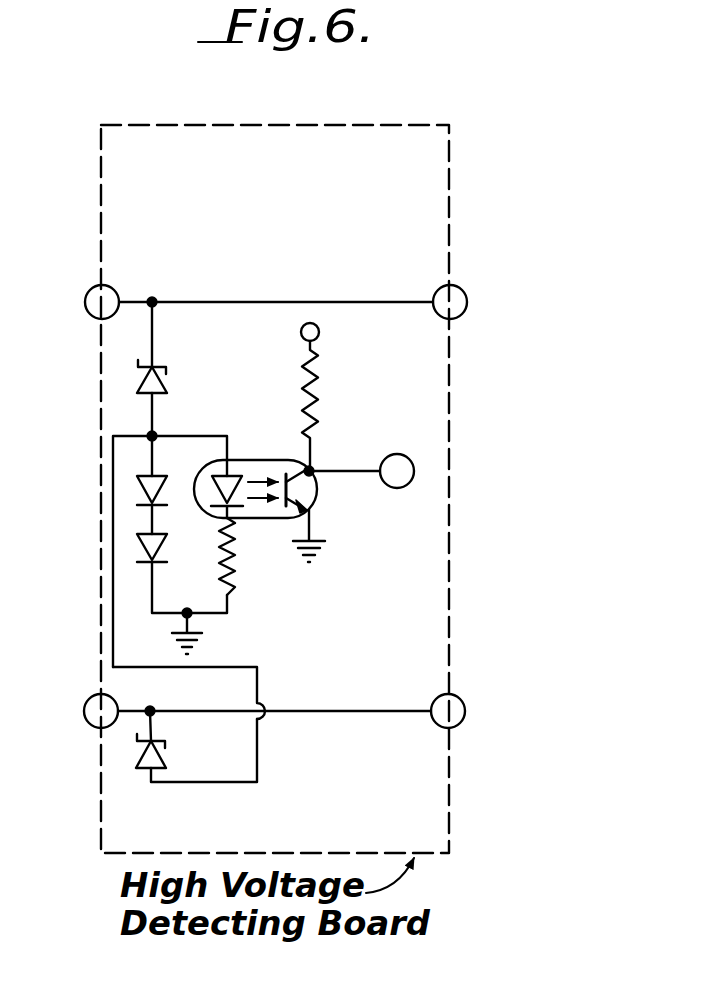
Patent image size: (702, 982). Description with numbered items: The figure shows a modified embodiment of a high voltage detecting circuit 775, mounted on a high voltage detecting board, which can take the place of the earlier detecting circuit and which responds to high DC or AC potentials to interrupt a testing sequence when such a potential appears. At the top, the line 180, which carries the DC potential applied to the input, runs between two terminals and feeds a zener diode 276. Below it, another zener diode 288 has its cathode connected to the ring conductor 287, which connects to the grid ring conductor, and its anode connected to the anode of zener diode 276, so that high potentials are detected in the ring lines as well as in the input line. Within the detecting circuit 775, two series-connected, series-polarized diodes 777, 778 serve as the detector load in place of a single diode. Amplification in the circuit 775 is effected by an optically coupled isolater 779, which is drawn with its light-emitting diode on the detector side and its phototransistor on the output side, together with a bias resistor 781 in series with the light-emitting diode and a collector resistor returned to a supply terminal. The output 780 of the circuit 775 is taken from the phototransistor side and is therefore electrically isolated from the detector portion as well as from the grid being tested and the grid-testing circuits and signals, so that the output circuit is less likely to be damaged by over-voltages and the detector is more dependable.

The line 180 is at (275, 302).
The zener diode 276 is at (170, 383).
The high voltage detecting circuit 775 is at (238, 600).
The diode 777 is at (150, 488).
The diode 778 is at (150, 543).
The optically coupled isolater 779 is at (290, 439).
The output 780 is at (357, 472).
The bias resistor 781 is at (232, 572).
The ring conductor 287 is at (400, 694).
The zener diode 288 is at (163, 756).